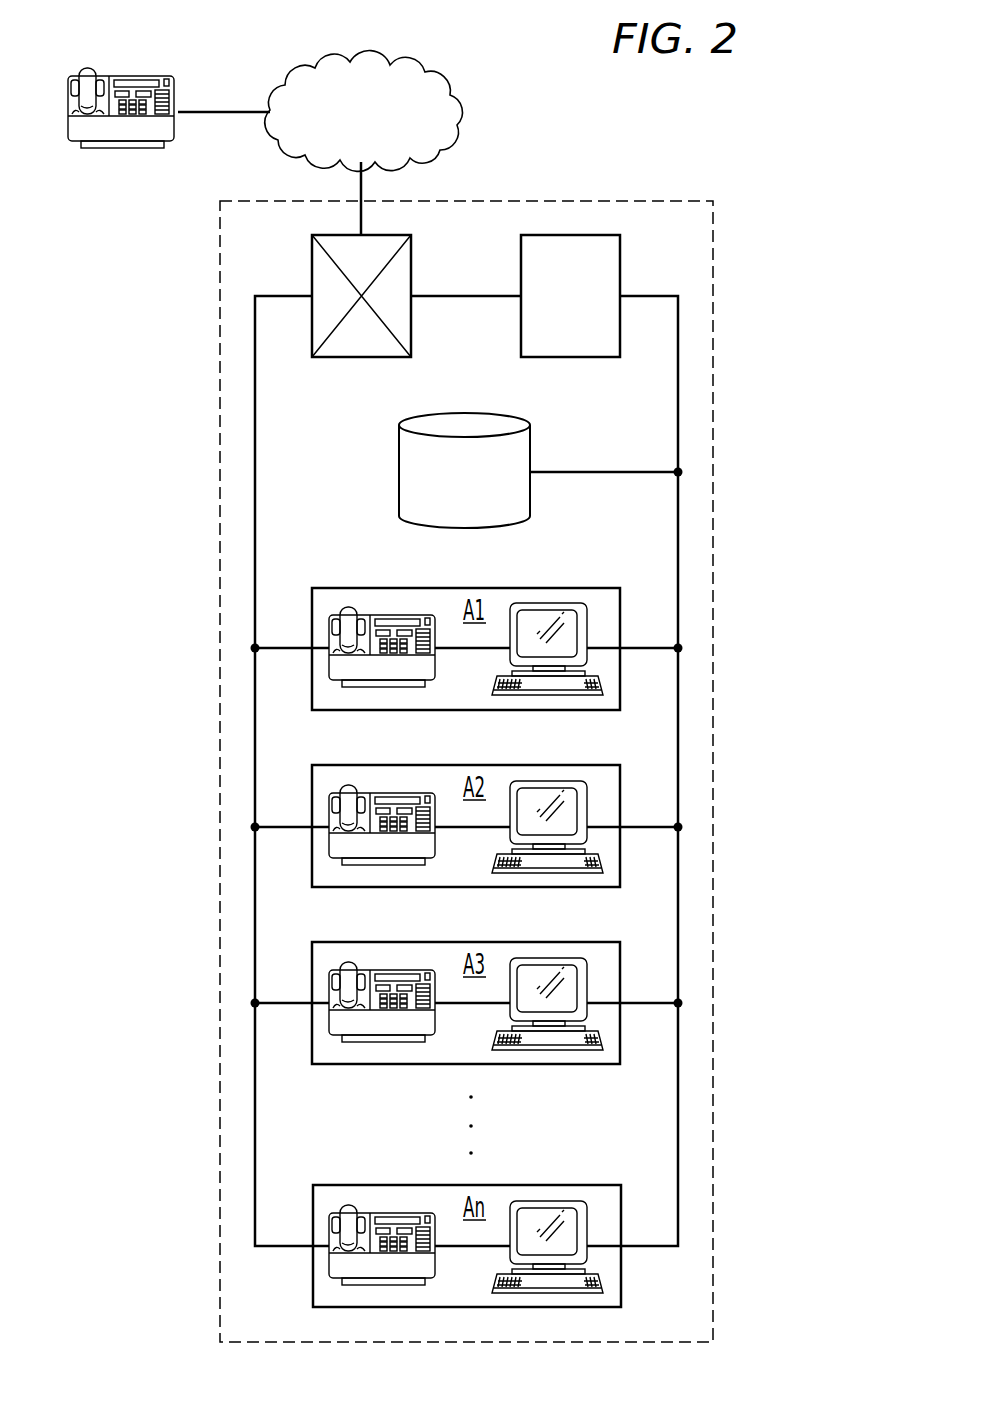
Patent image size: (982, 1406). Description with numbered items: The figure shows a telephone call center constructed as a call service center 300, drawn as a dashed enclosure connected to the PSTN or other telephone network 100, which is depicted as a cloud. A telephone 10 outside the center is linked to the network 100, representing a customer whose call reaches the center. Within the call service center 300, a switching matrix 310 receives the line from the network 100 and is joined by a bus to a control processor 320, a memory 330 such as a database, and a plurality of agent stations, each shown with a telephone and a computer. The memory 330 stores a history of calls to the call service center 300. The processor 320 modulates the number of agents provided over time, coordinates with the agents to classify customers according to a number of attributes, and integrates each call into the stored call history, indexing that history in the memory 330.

The telephone 10 is at (137, 80).
The telephone network 100 is at (372, 60).
The call service center 300 is at (566, 201).
The switching matrix 310 is at (312, 263).
The control processor 320 is at (620, 262).
The memory 330 is at (399, 470).